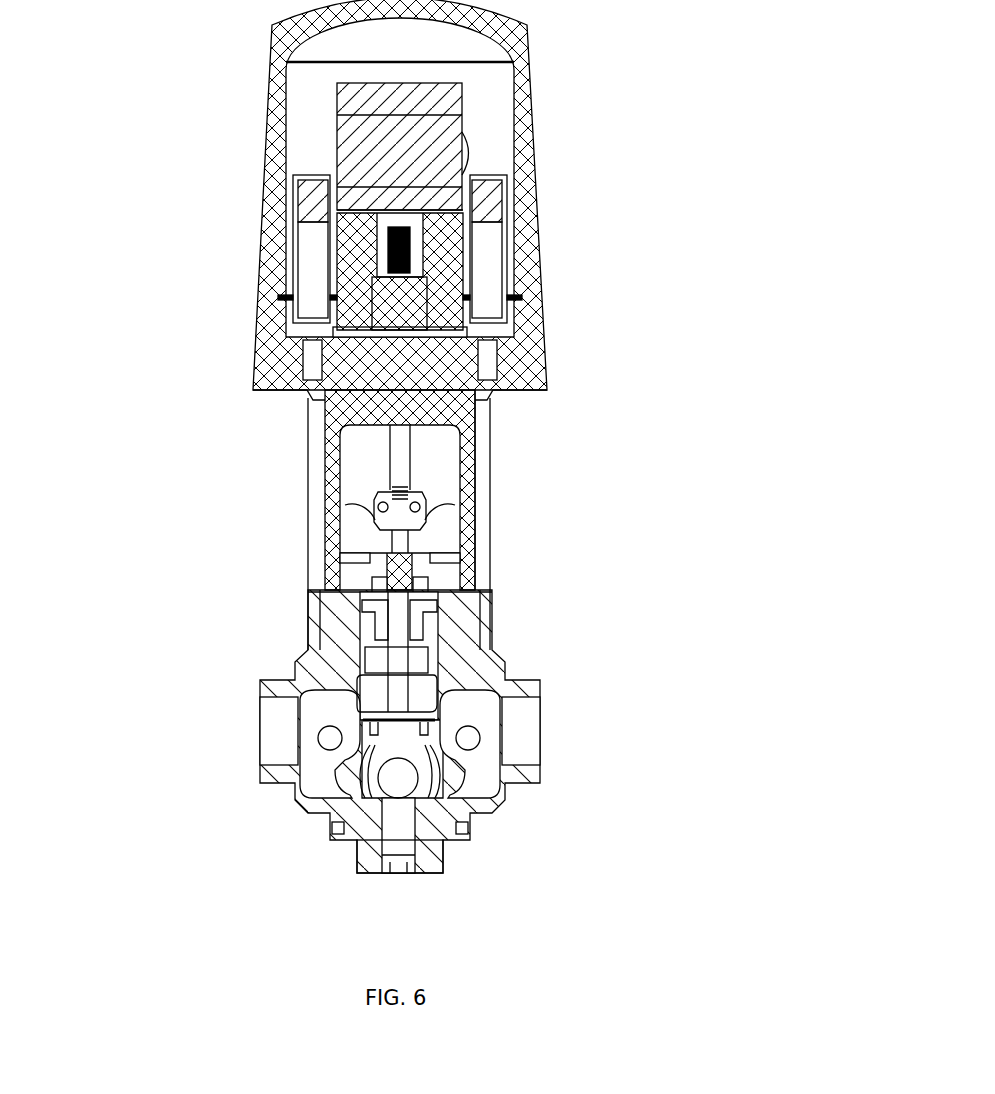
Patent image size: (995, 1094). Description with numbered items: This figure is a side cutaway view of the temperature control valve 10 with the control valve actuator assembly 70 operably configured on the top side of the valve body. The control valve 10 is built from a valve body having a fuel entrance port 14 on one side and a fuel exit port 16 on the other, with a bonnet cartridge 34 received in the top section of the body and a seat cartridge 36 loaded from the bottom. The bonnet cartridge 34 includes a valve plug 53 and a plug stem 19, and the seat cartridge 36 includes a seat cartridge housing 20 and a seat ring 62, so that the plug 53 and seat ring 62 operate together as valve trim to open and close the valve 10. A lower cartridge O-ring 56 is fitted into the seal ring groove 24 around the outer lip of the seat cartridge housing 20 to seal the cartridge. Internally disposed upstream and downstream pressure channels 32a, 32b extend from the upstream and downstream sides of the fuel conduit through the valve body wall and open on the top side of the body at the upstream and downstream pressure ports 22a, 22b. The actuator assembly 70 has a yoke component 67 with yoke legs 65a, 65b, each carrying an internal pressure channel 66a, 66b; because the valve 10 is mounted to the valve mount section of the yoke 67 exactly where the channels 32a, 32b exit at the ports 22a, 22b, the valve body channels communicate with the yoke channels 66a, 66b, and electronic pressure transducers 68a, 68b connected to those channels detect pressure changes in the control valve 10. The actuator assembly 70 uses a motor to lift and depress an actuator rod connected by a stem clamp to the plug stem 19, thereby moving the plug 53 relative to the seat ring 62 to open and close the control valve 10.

The temperature control valve 10 is at (652, 870).
The fuel entrance port 14 is at (277, 728).
The fuel exit port 16 is at (527, 727).
The plug stem 19 is at (420, 515).
The seat cartridge housing 20 is at (353, 850).
The upstream pressure port 22a is at (310, 585).
The downstream pressure port 22b is at (480, 583).
The seal ring groove 24 is at (340, 833).
The upstream pressure channel 32a is at (312, 628).
The downstream pressure channel 32b is at (478, 643).
The bonnet cartridge 34 is at (365, 642).
The seat cartridge 36 is at (415, 785).
The valve plug 53 is at (440, 733).
The lower cartridge O-ring 56 is at (462, 820).
The seat ring 62 is at (357, 747).
The yoke leg 65a is at (307, 518).
The yoke leg 65b is at (493, 530).
The internal pressure channel 66a is at (308, 467).
The internal pressure channel 66b is at (493, 470).
The yoke component 67 is at (307, 417).
The electronic pressure transducer 68a is at (313, 272).
The electronic pressure transducer 68b is at (493, 290).
The control valve actuator assembly 70 is at (652, 587).